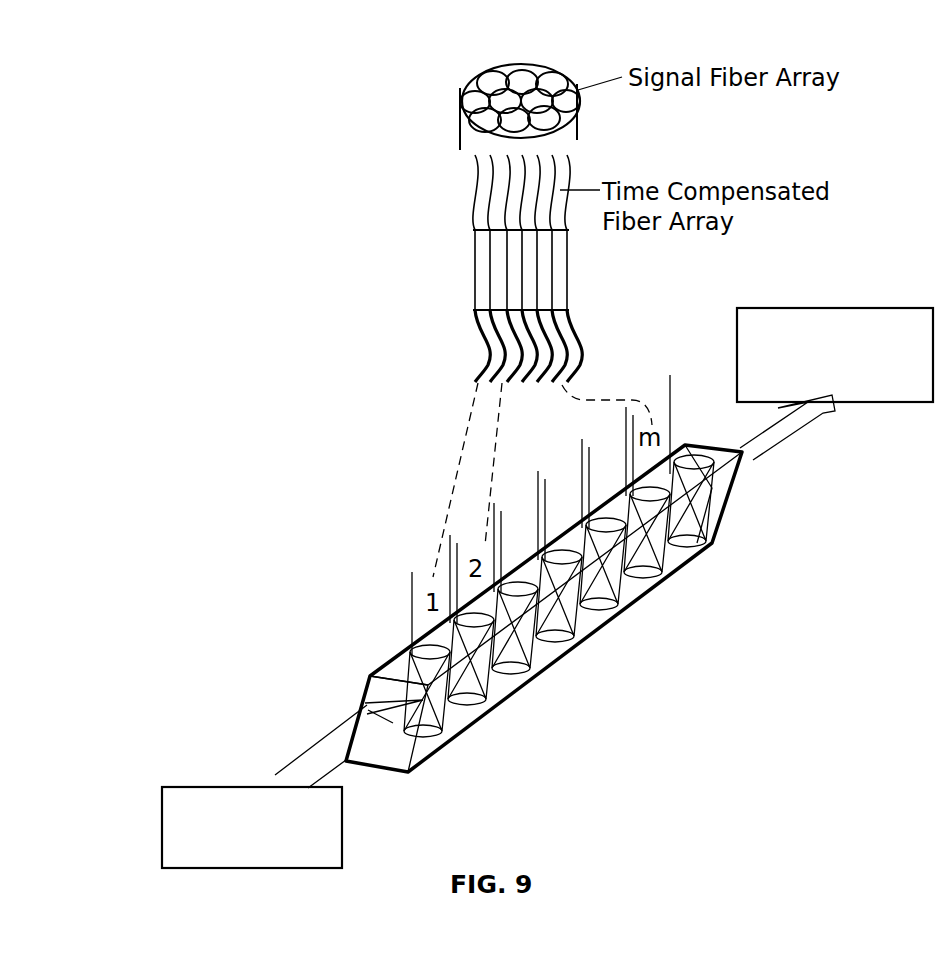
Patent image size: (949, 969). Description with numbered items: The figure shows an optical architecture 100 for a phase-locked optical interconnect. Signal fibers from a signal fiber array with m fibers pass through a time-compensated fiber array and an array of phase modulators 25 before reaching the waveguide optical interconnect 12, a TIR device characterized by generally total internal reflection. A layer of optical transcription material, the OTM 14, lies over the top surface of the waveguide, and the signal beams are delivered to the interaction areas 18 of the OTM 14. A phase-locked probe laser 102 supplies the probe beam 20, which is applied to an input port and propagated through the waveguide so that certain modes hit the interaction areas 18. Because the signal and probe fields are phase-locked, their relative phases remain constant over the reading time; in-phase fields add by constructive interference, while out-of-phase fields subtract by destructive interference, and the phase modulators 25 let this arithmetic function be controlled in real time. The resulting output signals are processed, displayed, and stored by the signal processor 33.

The optical architecture 100 is at (290, 151).
The phase modulators 25 is at (478, 278).
The signal processor 33 is at (860, 403).
The optical transcription material layer 14 is at (392, 670).
The interaction areas 18 is at (430, 640).
The waveguide optical interconnect 12 is at (367, 697).
The probe beam 20 is at (328, 748).
The phase-locked signal and probe laser 102 is at (284, 868).